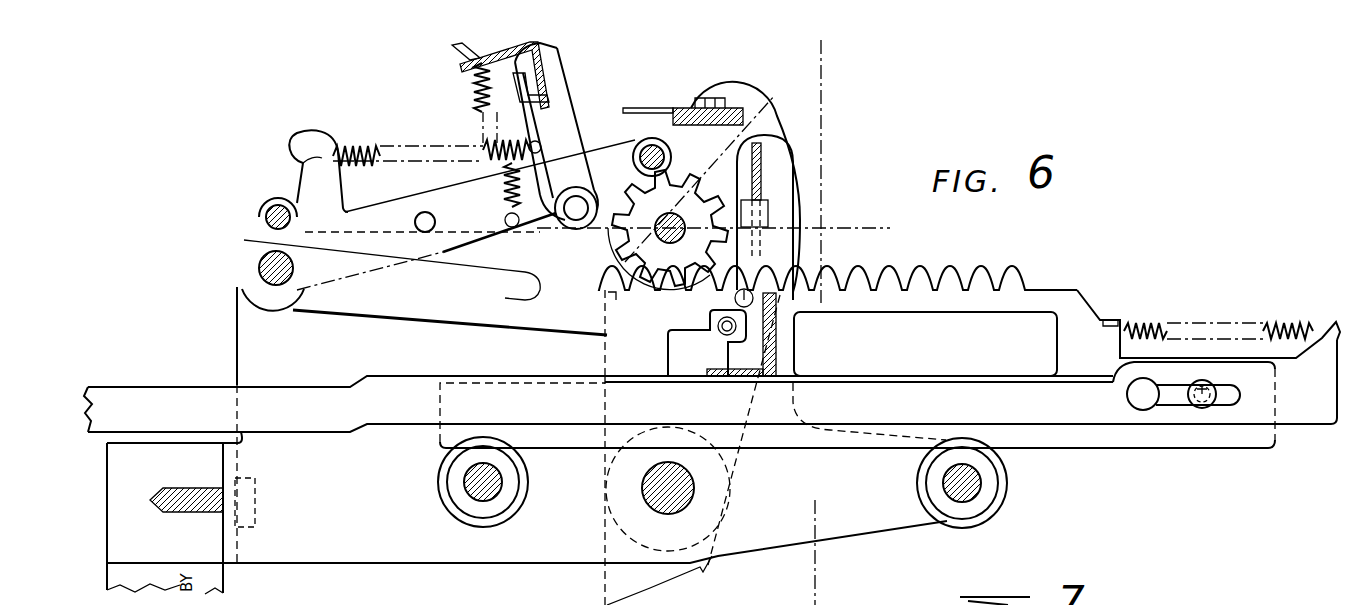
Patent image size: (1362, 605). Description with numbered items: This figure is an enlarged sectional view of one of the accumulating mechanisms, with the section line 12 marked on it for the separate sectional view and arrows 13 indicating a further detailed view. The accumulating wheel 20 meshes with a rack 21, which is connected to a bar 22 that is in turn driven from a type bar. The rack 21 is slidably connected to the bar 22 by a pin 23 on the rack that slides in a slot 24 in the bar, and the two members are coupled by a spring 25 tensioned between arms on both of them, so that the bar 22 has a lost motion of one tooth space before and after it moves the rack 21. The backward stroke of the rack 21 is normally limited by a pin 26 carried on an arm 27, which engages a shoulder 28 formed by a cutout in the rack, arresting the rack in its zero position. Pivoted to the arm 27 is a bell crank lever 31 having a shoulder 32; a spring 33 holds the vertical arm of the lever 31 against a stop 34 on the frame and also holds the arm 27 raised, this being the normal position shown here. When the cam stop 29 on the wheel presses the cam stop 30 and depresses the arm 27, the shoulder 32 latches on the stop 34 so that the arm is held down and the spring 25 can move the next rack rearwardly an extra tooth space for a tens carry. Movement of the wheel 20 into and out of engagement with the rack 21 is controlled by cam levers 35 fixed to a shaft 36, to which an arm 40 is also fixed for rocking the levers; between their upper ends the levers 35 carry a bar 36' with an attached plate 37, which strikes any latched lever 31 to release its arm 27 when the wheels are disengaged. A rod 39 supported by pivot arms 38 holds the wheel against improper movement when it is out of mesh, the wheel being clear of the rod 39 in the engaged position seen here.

The section line 12— 12 is at (828, 584).
The pivot pin 13 is at (841, 245).
The accumulating wheel 20 is at (690, 180).
The rack 21 is at (1013, 284).
The bar 22 is at (1110, 418).
The pin 23 is at (1207, 408).
The slot 24 is at (1176, 390).
The spring 25 is at (1147, 327).
The pin 26 is at (727, 345).
The arm 27 is at (560, 325).
The shoulder 28 is at (714, 322).
The cam stop 29 is at (676, 291).
The cam stop 30 is at (616, 297).
The bell crank lever 31 is at (535, 122).
The shoulder 32 is at (530, 93).
The spring 33 is at (470, 68).
The stop 34 is at (540, 66).
The cam lever 35 is at (747, 105).
The shaft 36 is at (693, 489).
The bar 36' is at (760, 233).
The plate 37 is at (677, 110).
The pivot arm 38 is at (452, 192).
The rod 39 is at (648, 146).
The arm 40 is at (605, 586).